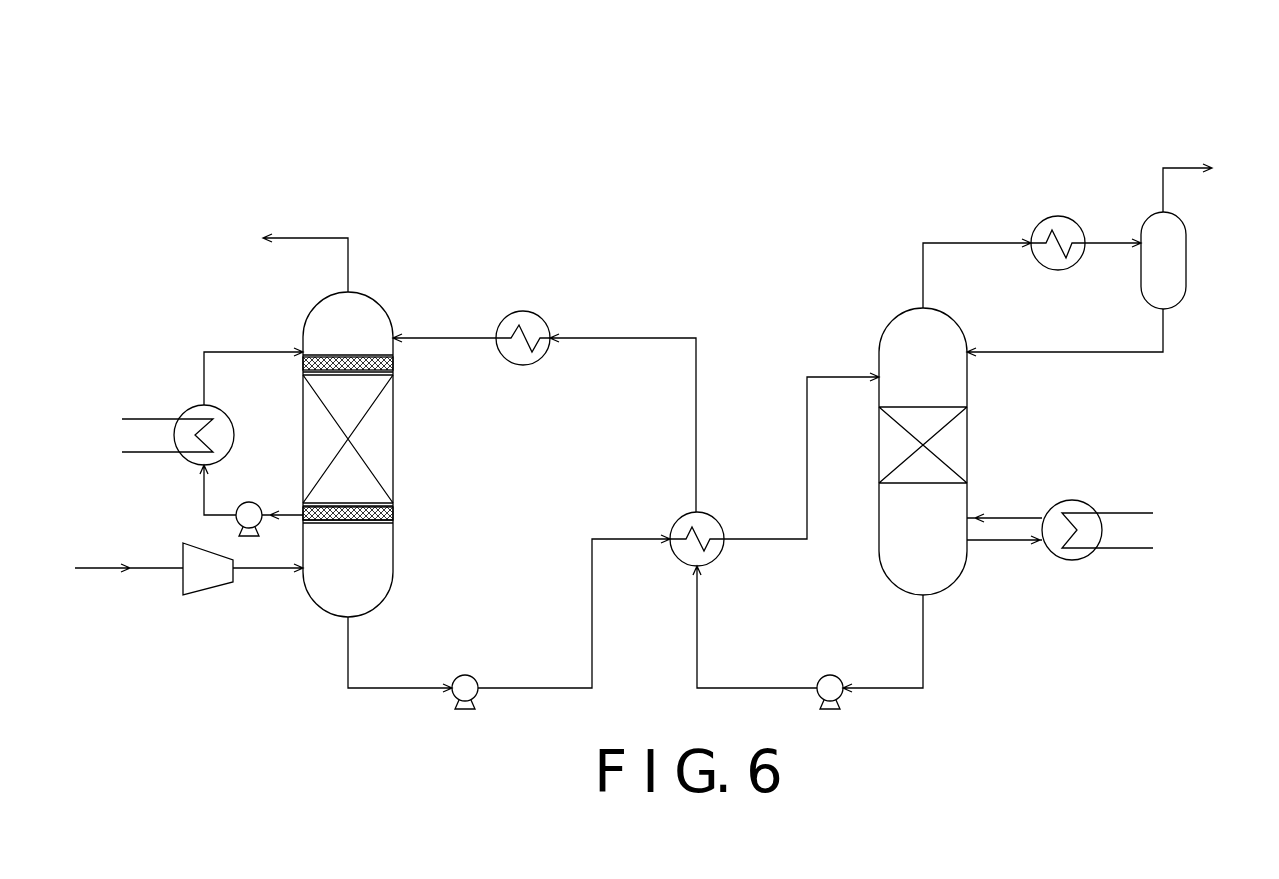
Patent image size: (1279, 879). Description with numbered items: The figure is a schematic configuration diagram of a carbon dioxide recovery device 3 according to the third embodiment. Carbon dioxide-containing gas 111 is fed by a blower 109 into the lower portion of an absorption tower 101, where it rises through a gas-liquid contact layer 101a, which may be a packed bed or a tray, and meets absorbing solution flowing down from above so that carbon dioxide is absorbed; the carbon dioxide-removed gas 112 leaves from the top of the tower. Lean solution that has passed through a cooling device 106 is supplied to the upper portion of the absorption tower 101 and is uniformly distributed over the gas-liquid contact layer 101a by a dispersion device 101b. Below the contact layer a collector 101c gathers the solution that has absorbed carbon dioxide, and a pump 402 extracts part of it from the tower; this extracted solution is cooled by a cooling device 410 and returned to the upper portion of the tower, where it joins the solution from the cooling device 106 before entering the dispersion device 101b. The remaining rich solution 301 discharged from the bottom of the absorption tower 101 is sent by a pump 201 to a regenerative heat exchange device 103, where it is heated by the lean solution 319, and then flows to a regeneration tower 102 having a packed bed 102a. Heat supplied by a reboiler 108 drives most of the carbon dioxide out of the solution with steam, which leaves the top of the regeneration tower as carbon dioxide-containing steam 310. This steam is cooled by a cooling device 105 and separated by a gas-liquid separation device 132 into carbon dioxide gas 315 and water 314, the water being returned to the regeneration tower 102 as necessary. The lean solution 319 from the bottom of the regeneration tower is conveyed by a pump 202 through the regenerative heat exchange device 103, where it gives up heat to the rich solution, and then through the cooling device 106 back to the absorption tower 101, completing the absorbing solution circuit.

The carbon dioxide recovery device 3 is at (1088, 86).
The absorption tower 101 is at (303, 318).
The gas-liquid contact layer 101a is at (385, 434).
The dispersion device 101b is at (395, 364).
The collector 101c is at (395, 511).
The regeneration tower 102 is at (970, 381).
The packed bed 102a is at (970, 451).
The regenerative heat exchange device 103 is at (718, 559).
The cooling device 105 is at (1053, 216).
The cooling device 106 is at (520, 311).
The reboiler 108 is at (1080, 560).
The blower 109 is at (212, 598).
The carbon dioxide-containing gas 111 is at (132, 564).
The carbon dioxide-removed gas 112 is at (305, 233).
The gas-liquid separation device 132 is at (1190, 261).
The pump 201 is at (462, 672).
The pump 202 is at (830, 673).
The rich solution 301 is at (345, 661).
The carbon dioxide-containing steam 310 is at (940, 238).
The water 314 is at (1168, 341).
The carbon dioxide gas 315 is at (1180, 162).
The lean solution 319 is at (925, 661).
The pump 402 is at (252, 501).
The cooling device 410 is at (190, 408).